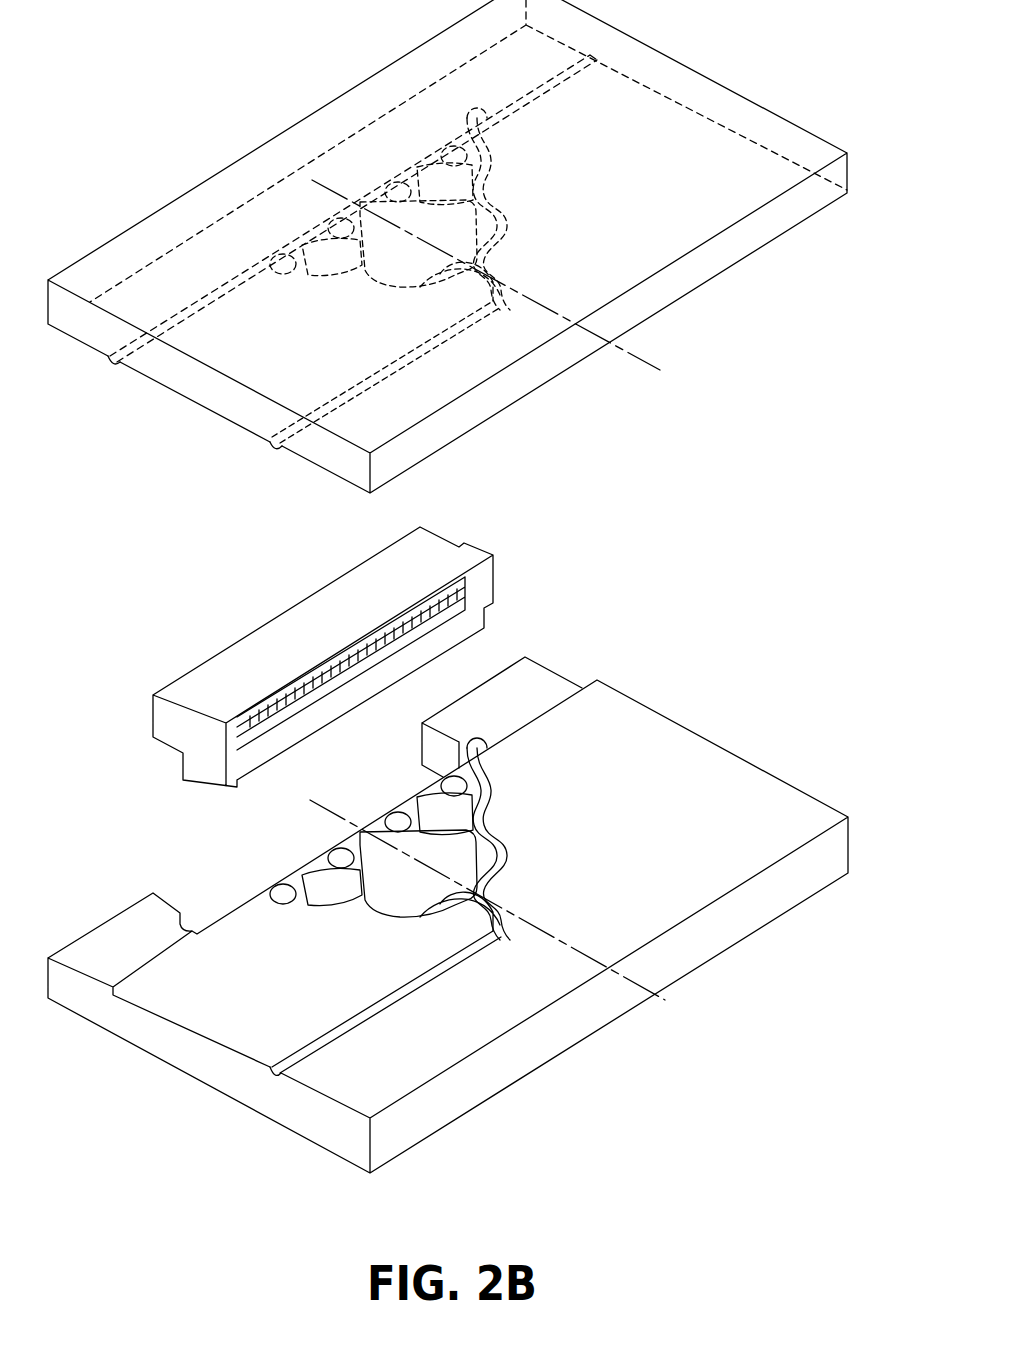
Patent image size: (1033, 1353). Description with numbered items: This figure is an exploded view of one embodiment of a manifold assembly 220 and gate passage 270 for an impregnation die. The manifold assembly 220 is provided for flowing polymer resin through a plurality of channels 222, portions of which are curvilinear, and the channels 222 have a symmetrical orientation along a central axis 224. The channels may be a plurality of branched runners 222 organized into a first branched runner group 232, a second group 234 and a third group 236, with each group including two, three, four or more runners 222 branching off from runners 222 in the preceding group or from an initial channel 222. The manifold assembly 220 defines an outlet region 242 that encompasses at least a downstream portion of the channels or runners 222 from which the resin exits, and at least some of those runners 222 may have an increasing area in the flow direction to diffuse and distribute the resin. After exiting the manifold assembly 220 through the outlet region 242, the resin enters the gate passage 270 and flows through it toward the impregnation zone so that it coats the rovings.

The manifold assembly 220 is at (522, 262).
The channels 222 is at (472, 165).
The central axis 224 is at (545, 308).
The first branched runner group 232 is at (365, 290).
The second branched runner group 234 is at (303, 287).
The third branched runner group 236 is at (262, 287).
The outlet region 242 is at (408, 541).
The gate passage 270 is at (425, 636).